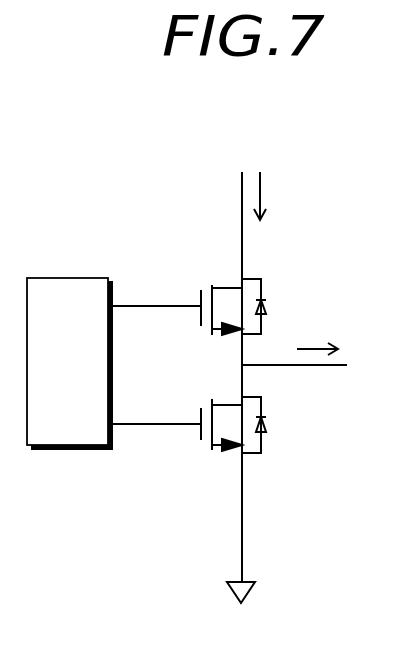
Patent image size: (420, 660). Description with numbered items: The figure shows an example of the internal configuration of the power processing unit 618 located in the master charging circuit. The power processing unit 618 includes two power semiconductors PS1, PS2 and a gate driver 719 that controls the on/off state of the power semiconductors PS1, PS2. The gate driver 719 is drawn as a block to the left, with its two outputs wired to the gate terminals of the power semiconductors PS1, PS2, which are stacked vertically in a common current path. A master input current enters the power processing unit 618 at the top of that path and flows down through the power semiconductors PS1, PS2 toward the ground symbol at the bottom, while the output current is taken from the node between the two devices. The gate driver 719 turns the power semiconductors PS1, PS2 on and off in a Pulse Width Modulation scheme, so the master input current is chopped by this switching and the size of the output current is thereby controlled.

The power processing unit 618 is at (86, 189).
The gate driver 719 is at (89, 376).
The power semiconductor PS1 is at (218, 293).
The power semiconductor PS2 is at (218, 410).